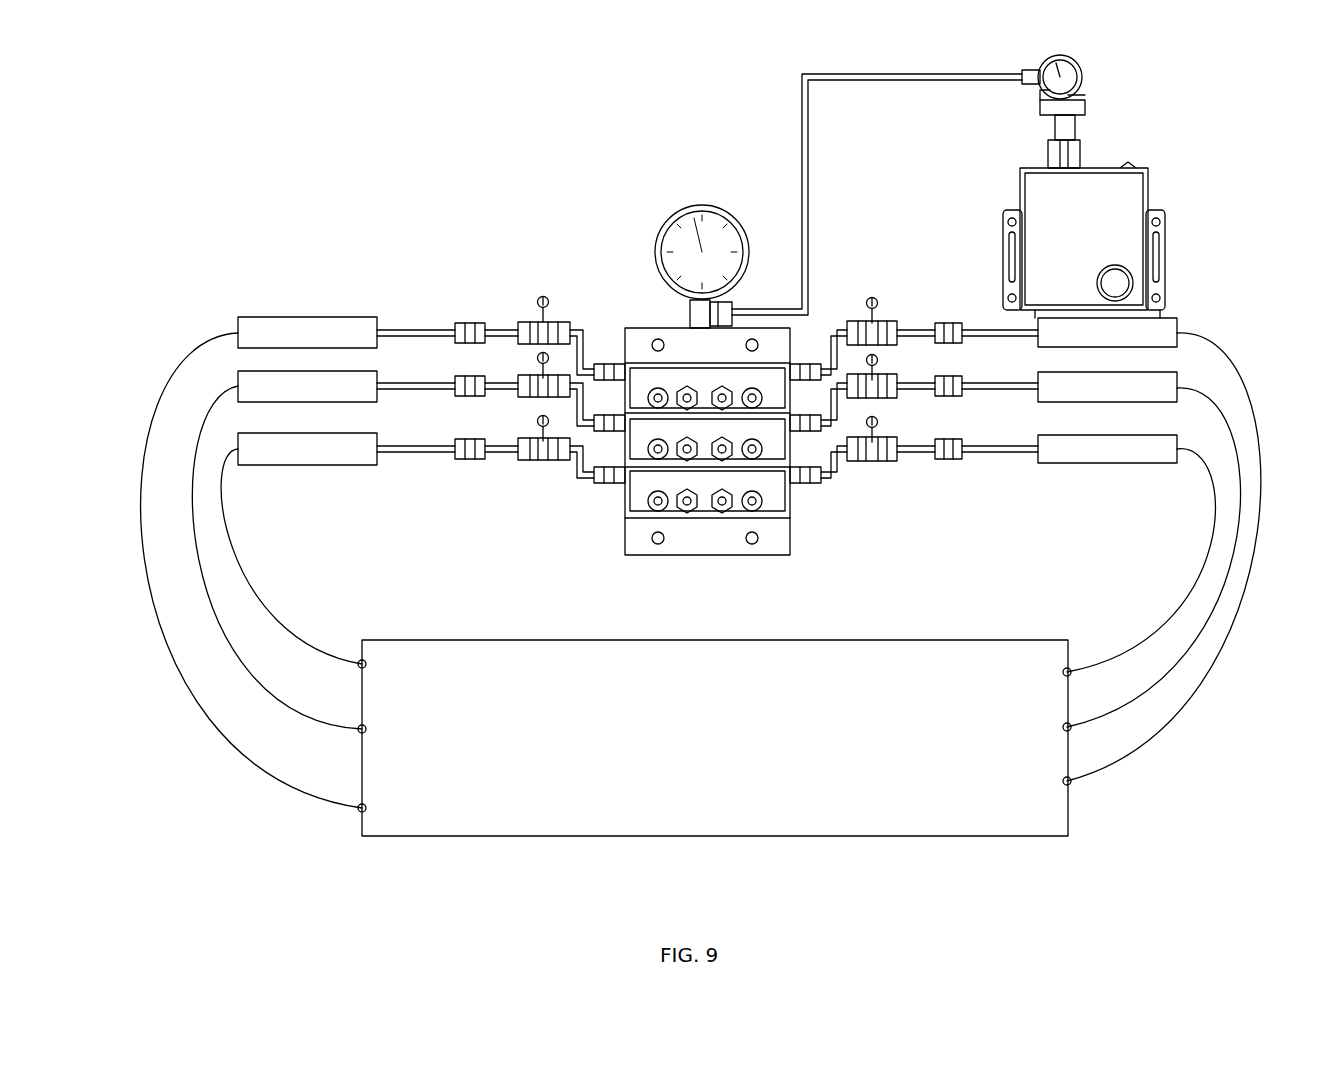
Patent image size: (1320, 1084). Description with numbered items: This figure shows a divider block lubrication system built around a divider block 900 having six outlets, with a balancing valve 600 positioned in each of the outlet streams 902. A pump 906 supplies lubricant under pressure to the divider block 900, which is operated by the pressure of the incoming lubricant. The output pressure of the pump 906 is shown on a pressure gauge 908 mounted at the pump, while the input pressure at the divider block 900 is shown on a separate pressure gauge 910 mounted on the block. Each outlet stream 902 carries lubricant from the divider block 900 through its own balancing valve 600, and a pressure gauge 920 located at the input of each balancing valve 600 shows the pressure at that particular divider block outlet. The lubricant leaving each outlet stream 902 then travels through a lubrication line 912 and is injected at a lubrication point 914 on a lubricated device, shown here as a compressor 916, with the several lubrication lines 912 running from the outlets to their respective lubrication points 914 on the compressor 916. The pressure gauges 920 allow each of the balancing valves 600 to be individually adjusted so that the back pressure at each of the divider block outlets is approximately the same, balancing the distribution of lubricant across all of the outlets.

The divider block 900 is at (600, 552).
The balancing valve 600 is at (490, 323).
The outlet stream 902 is at (355, 316).
The pump 906 is at (1150, 190).
The pressure gauge 908 is at (1070, 58).
The pressure gauge 910 is at (656, 248).
The lubrication line 912 is at (227, 490).
The lubrication point 914 is at (366, 666).
The compressor 916 is at (860, 640).
The pressure gauge 920 is at (547, 296).